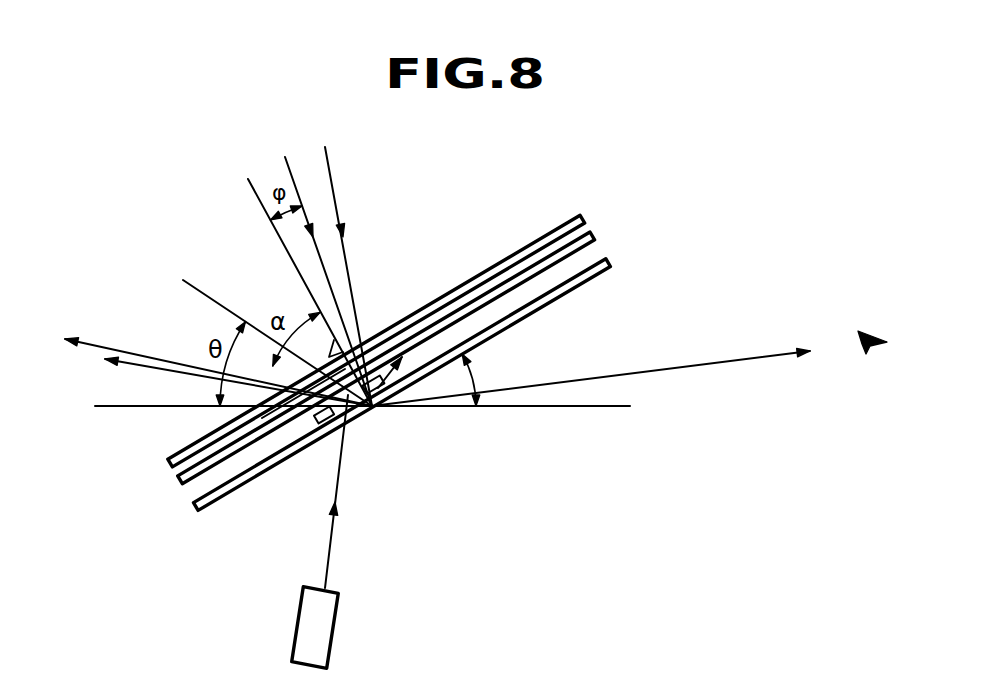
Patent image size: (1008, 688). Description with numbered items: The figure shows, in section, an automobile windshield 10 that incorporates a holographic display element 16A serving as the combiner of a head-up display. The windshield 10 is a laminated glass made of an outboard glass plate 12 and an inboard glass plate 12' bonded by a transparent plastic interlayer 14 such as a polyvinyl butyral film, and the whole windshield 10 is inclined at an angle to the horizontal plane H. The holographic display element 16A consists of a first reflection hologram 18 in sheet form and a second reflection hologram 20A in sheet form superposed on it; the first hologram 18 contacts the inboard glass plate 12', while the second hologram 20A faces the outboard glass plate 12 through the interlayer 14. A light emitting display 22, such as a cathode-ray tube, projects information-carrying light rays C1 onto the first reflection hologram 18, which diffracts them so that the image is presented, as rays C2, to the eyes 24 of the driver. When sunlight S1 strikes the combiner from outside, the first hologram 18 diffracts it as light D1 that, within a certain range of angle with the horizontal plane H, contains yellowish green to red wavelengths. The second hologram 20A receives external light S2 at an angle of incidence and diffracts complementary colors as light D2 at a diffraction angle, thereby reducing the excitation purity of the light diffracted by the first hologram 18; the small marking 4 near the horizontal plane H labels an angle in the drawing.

The automobile windshield 10 is at (596, 218).
The glass plate 12 is at (376, 311).
The transparent plastic interlayer 14 is at (597, 236).
The glass plate 12' is at (436, 385).
The holographic display element 16A is at (395, 375).
The first reflection hologram 18 is at (330, 427).
The second reflection hologram 20A is at (300, 410).
The light emitting display 22 is at (340, 622).
The eyes 24 is at (868, 358).
The angle 4 is at (481, 380).
The arrow S1 is at (332, 172).
The arrow S2 is at (291, 168).
The arrow D1 is at (153, 366).
The arrow D2 is at (128, 349).
The arrow C1 is at (332, 532).
The arrow C2 is at (712, 362).
The horizontal plane H is at (97, 406).